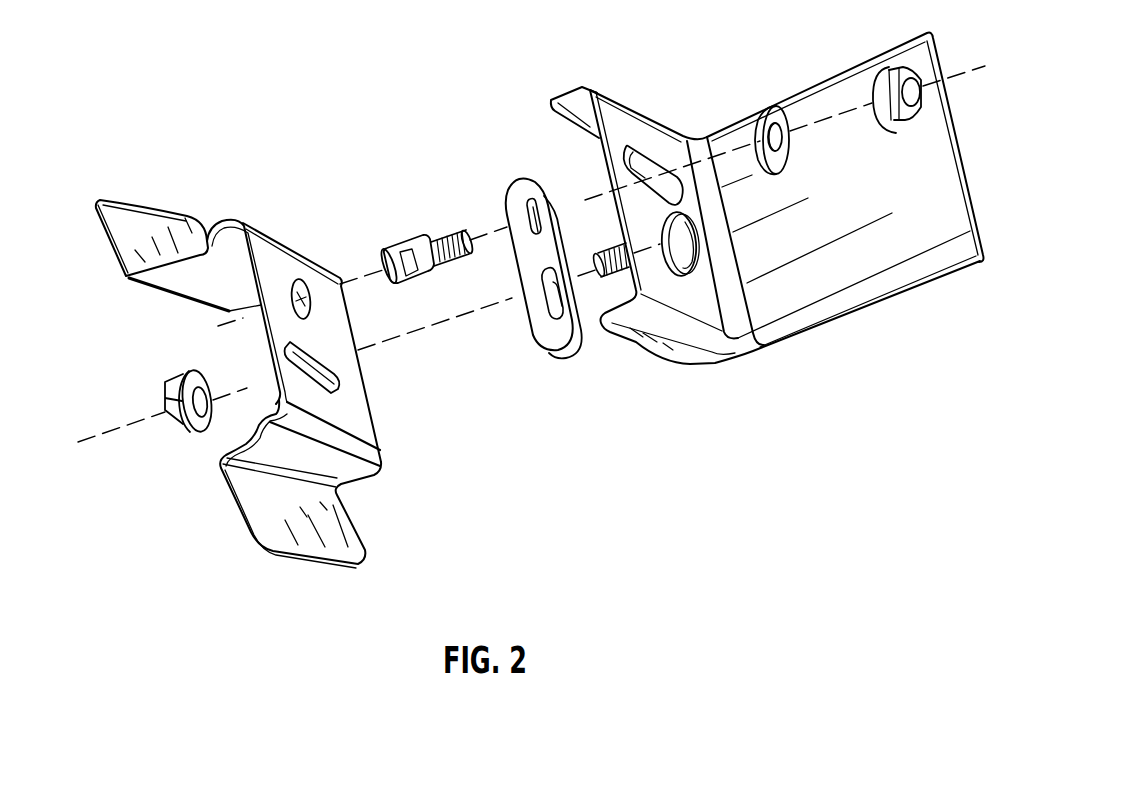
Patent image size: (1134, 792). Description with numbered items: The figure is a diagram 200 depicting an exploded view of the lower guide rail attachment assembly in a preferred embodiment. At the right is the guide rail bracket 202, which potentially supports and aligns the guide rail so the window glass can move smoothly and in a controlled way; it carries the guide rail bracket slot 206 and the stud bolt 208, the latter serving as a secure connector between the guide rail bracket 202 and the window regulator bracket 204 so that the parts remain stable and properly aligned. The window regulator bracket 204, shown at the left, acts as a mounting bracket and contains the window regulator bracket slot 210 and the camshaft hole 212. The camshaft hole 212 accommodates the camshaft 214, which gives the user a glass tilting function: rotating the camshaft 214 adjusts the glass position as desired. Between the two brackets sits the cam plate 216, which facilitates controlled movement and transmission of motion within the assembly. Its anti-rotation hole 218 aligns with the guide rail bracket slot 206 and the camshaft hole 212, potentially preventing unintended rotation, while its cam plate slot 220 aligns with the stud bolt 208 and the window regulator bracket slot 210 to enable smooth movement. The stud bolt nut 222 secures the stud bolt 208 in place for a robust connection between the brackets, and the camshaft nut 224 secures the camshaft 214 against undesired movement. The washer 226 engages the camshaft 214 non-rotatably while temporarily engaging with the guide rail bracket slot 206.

The diagram 200 is at (148, 84).
The guide rail bracket 202 is at (920, 212).
The window regulator bracket 204 is at (153, 230).
The guide rail bracket slot 206 is at (643, 172).
The stud bolt 208 is at (683, 240).
The window regulator bracket slot 210 is at (323, 373).
The camshaft hole 212 is at (310, 303).
The camshaft 214 is at (405, 247).
The cam plate 216 is at (561, 353).
The anti-rotation hole 218 is at (517, 178).
The cam plate slot 220 is at (557, 297).
The stud bolt nut 222 is at (182, 427).
The camshaft nut 224 is at (887, 66).
The washer 226 is at (762, 108).